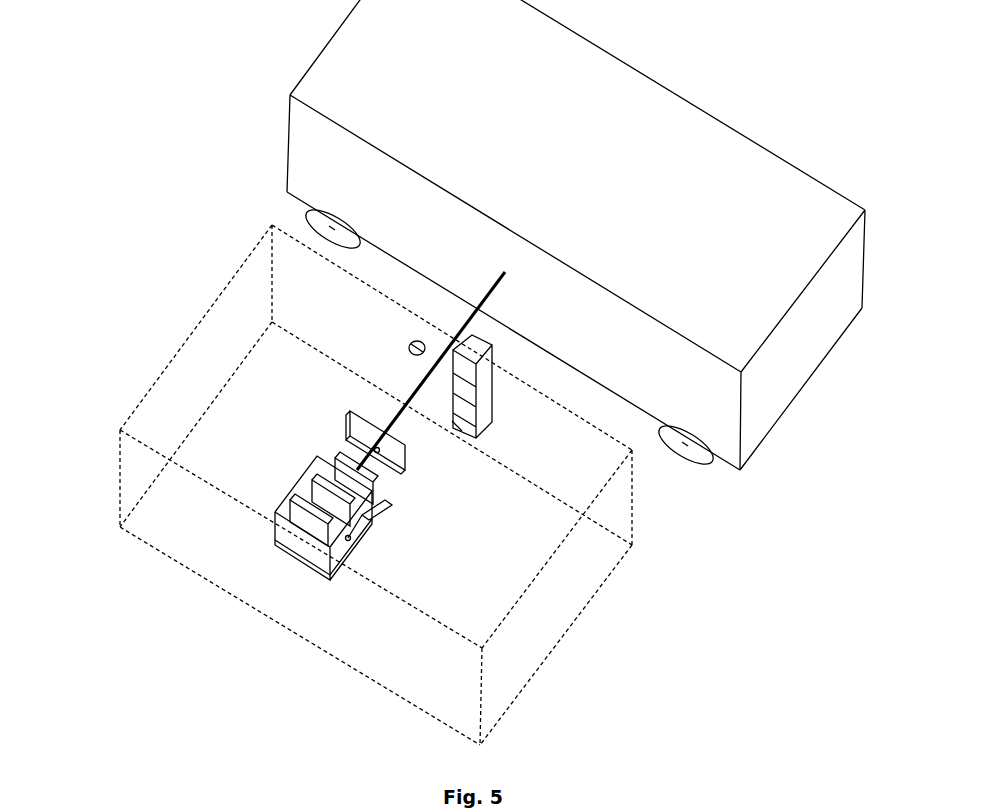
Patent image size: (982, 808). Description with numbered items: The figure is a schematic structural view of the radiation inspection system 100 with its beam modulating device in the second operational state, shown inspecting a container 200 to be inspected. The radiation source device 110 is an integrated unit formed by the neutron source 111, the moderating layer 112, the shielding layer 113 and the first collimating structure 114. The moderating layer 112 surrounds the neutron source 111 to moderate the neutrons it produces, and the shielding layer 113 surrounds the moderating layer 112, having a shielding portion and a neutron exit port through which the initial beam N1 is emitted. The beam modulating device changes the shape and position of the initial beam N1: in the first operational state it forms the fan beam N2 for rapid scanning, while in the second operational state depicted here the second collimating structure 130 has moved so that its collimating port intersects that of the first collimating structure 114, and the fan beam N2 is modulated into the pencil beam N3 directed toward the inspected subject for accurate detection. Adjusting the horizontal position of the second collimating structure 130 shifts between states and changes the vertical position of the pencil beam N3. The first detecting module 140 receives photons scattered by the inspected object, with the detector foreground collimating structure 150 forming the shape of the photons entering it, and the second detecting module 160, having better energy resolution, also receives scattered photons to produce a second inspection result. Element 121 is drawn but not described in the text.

The radiation inspection system 100 is at (157, 376).
The radiation source device 110 is at (290, 557).
The neutron source 111 is at (330, 580).
The moderating layer 112 is at (290, 503).
The shielding layer 113 is at (305, 482).
The first collimating structure 114 is at (335, 458).
The link member 121 is at (369, 520).
The second collimating structure 130 is at (350, 424).
The first detecting module 140 is at (458, 425).
The detector foreground collimating structure 150 is at (492, 397).
The second detecting module 160 is at (407, 341).
The container to be inspected 200 is at (637, 70).
The initial beam N1 is at (368, 555).
The fan beam N2 is at (380, 453).
The pencil beam N3 is at (490, 290).